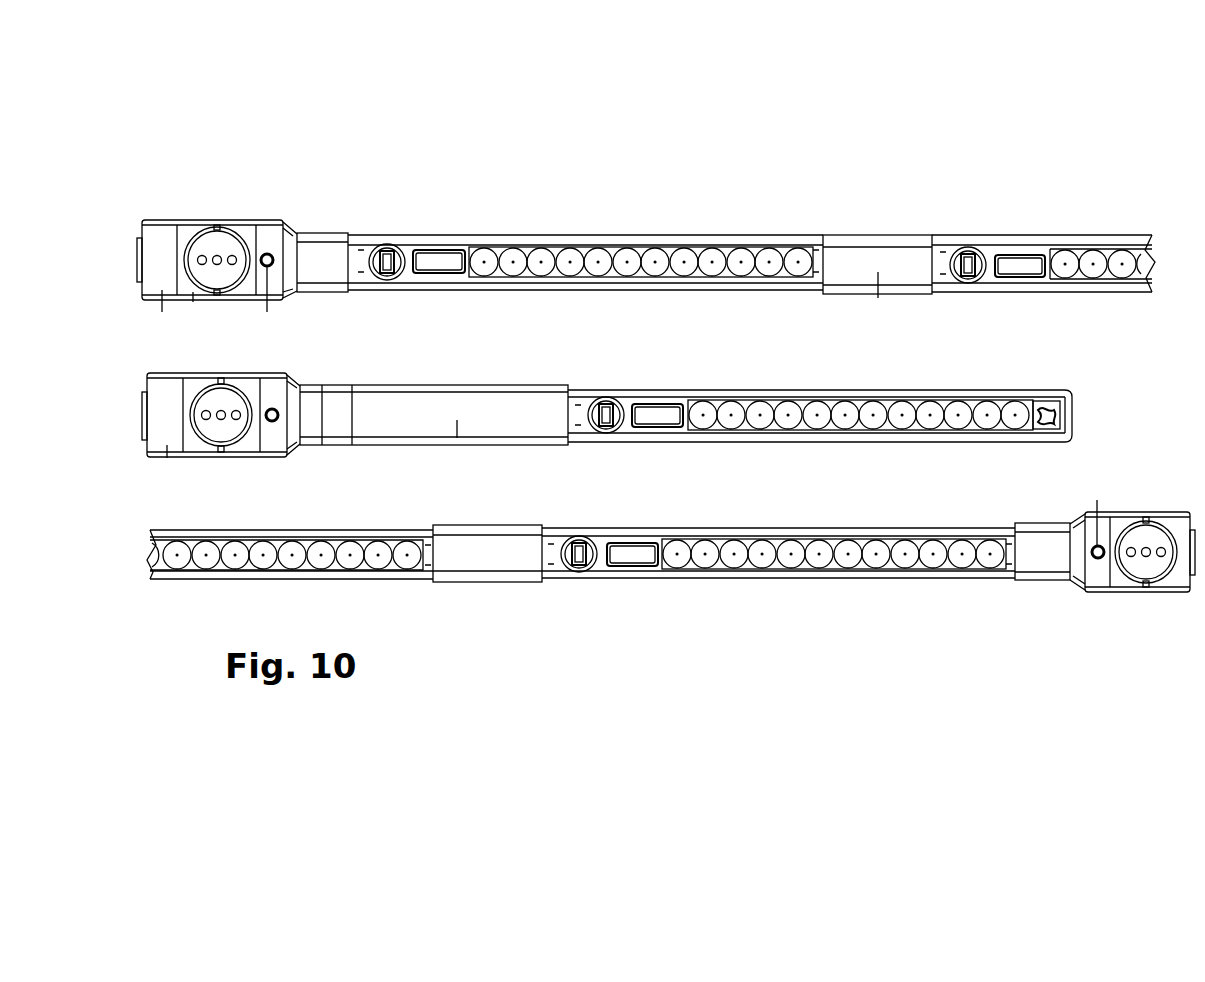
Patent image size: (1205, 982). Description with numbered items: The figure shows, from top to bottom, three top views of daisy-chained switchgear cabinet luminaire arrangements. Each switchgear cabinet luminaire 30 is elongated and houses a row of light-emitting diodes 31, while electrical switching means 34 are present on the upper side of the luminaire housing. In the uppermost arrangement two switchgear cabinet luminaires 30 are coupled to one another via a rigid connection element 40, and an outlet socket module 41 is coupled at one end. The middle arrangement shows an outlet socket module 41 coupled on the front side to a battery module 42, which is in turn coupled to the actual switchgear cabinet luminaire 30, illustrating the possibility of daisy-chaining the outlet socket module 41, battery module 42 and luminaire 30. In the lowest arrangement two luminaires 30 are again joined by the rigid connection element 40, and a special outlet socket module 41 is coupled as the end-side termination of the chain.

The switchgear cabinet luminaire 30 is at (612, 236).
The light-emitting diodes 31 is at (516, 270).
The electrical switching means 34 is at (387, 246).
The rigid connection element 40 is at (875, 236).
The outlet socket module 41 is at (285, 222).
The battery module 42 is at (415, 393).